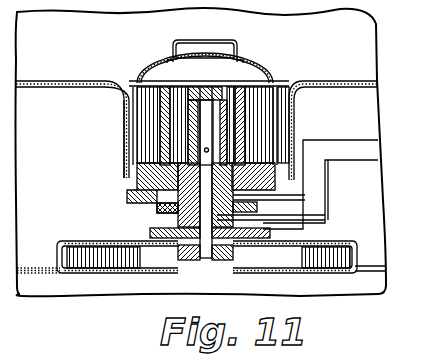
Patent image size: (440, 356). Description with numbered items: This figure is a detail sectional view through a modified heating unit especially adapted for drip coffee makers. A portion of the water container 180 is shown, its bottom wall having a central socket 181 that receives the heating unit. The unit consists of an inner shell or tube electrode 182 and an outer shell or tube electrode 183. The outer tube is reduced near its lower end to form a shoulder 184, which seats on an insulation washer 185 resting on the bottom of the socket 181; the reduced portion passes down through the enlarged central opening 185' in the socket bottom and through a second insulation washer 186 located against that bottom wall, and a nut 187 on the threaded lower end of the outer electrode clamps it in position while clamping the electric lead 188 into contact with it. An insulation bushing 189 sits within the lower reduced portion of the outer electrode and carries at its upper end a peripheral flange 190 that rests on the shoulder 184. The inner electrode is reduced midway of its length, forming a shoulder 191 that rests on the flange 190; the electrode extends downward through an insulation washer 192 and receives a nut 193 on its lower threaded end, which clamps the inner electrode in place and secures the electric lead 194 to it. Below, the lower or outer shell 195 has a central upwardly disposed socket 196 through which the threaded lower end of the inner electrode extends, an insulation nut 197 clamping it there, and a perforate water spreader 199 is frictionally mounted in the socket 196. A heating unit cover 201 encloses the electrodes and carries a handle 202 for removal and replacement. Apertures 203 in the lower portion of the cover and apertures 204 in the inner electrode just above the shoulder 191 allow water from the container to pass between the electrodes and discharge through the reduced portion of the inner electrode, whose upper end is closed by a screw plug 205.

The water container 180 is at (73, 81).
The central socket 181 is at (122, 142).
The inner shell or tube electrode 182 is at (233, 113).
The outer shell or tube electrode 183 is at (250, 143).
The shoulder 184 is at (153, 204).
The insulation washer 185 is at (123, 188).
The enlarged central opening 185' is at (287, 164).
The insulation washer 186 is at (147, 200).
The nut 187 is at (167, 213).
The electric lead 188 is at (347, 140).
The insulation bushing 189 is at (298, 82).
The peripheral flange 190 is at (187, 157).
The shoulder 191 is at (187, 161).
The insulation washer 192 is at (253, 204).
The nut 193 is at (237, 234).
The electric lead 194 is at (328, 213).
The lower or outer shell 195 is at (201, 244).
The central upwardly disposed socket 196 is at (357, 253).
The insulation nut 197 is at (228, 260).
The perforate water spreader 199 is at (93, 273).
The heating unit cover 201 is at (234, 42).
The handle 202 is at (178, 40).
The apertures 203 is at (133, 151).
The apertures 204 is at (206, 69).
The screw plug 205 is at (174, 62).